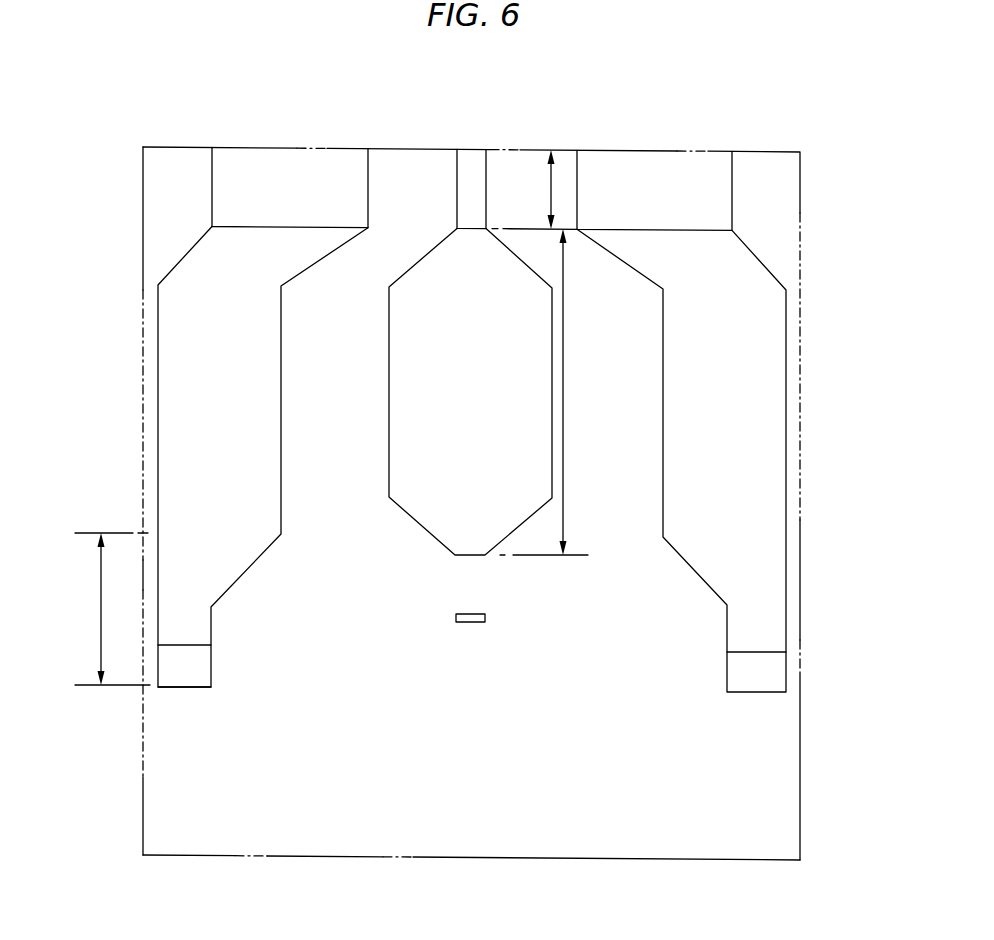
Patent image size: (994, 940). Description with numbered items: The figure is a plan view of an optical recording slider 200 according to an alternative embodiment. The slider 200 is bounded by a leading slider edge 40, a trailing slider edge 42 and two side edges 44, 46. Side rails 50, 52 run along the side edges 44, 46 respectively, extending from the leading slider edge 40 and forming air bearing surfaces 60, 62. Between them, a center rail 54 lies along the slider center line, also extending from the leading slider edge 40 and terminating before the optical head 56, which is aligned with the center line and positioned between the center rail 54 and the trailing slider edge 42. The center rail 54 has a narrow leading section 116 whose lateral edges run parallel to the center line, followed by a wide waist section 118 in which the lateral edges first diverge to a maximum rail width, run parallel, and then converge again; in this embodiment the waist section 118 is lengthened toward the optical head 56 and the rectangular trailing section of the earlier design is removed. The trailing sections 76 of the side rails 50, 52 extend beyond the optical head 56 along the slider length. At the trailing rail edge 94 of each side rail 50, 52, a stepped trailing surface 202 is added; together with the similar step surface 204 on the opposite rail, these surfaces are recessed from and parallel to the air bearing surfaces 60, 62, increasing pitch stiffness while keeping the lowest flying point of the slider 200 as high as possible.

The leading slider edge 40 is at (175, 147).
The trailing slider edge 42 is at (213, 856).
The side edge 44 is at (143, 823).
The side edge 46 is at (800, 812).
The side rail 50 is at (281, 143).
The side rail 52 is at (652, 138).
The center rail 54 is at (475, 138).
The optical head 56 is at (460, 623).
The air bearing surface 60 is at (203, 469).
The air bearing surface 62 is at (746, 469).
The trailing section 76 is at (100, 627).
The trailing rail edge 94 is at (183, 688).
The narrow leading section 116 is at (550, 185).
The wide waist section 118 is at (563, 463).
The slider 200 is at (740, 134).
The stepped trailing surface 202 is at (175, 670).
The second lower pocket step 204 is at (778, 673).